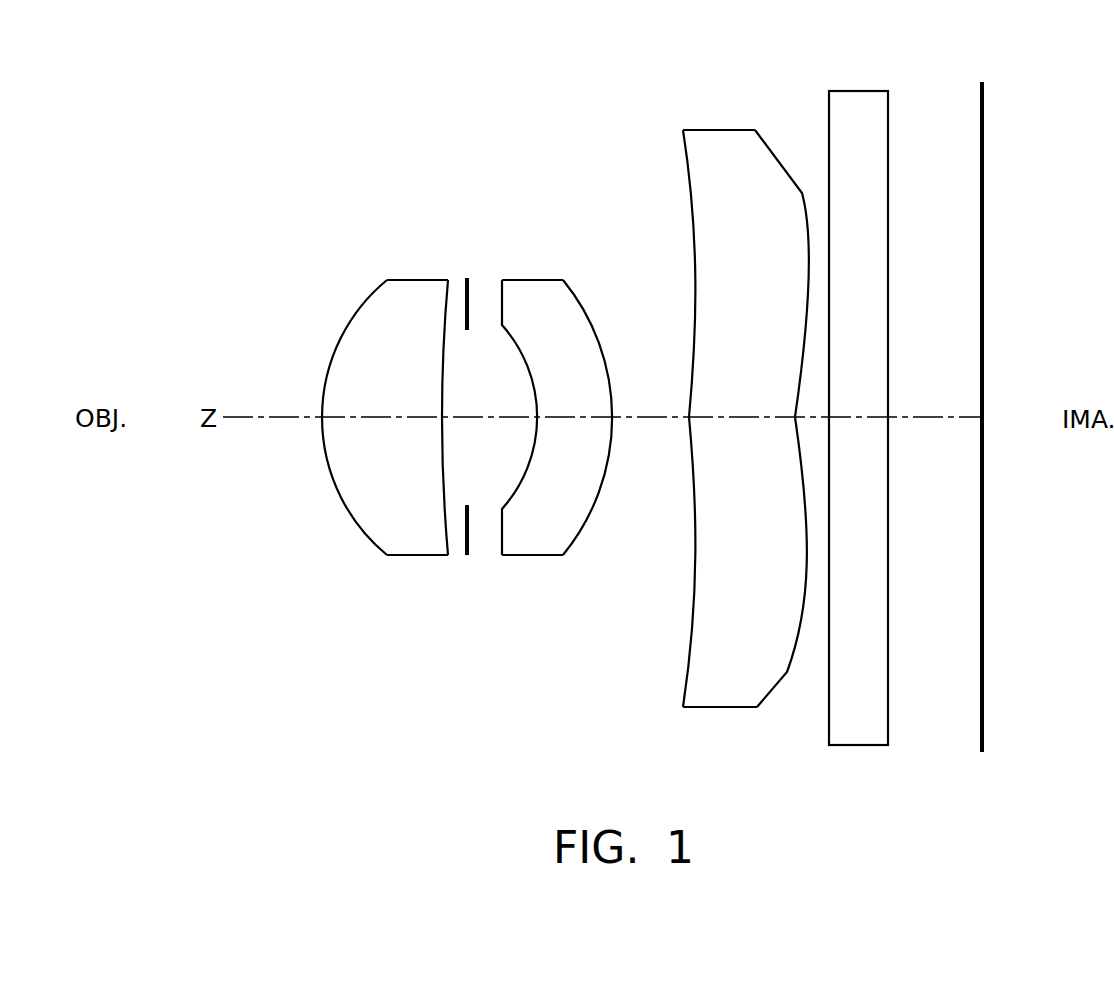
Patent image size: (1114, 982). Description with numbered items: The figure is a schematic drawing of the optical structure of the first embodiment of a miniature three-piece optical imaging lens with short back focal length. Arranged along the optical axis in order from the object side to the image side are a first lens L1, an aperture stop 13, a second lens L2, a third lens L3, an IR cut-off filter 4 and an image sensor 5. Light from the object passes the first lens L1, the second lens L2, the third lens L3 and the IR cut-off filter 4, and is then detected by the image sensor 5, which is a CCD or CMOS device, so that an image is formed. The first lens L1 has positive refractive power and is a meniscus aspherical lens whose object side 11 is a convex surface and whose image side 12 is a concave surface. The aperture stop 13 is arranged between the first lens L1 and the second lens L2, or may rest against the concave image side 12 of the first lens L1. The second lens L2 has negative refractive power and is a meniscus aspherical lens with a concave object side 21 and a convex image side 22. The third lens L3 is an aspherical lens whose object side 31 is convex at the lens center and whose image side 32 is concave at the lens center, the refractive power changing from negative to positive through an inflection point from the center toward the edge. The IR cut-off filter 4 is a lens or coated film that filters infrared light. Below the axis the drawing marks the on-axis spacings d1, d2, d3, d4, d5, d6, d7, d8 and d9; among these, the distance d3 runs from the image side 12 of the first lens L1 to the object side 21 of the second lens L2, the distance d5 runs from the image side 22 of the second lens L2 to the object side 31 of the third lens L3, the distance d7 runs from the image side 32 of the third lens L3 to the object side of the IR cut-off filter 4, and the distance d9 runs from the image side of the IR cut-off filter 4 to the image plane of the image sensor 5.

The first lens L1 is at (374, 418).
The object side of the first lens 11 is at (345, 515).
The image side of the first lens 12 is at (448, 527).
The aperture stop 13 is at (467, 300).
The second lens L2 is at (557, 414).
The object side of the second lens 21 is at (510, 497).
The image side of the second lens 22 is at (587, 522).
The third lens L3 is at (703, 415).
The object side of the third lens 31 is at (686, 630).
The image side of the third lens 32 is at (782, 672).
The IR cut-off filter 4 is at (860, 105).
The image sensor 5 is at (984, 172).
The on-axis distance d1 is at (321, 417).
The on-axis distance d2 is at (385, 417).
The distance from the image side of the first lens to the object side of the second d3 is at (483, 417).
The on-axis distance d4 is at (574, 417).
The distance from the image side of the second lens to the object side of the third d5 is at (651, 417).
The on-axis distance d6 is at (738, 417).
The distance from the image side of the third lens to the object side of the IR cut- d7 is at (811, 417).
The on-axis distance d8 is at (860, 417).
The distance from the image side of the IR cut-off filter to the image plane d9 is at (936, 417).